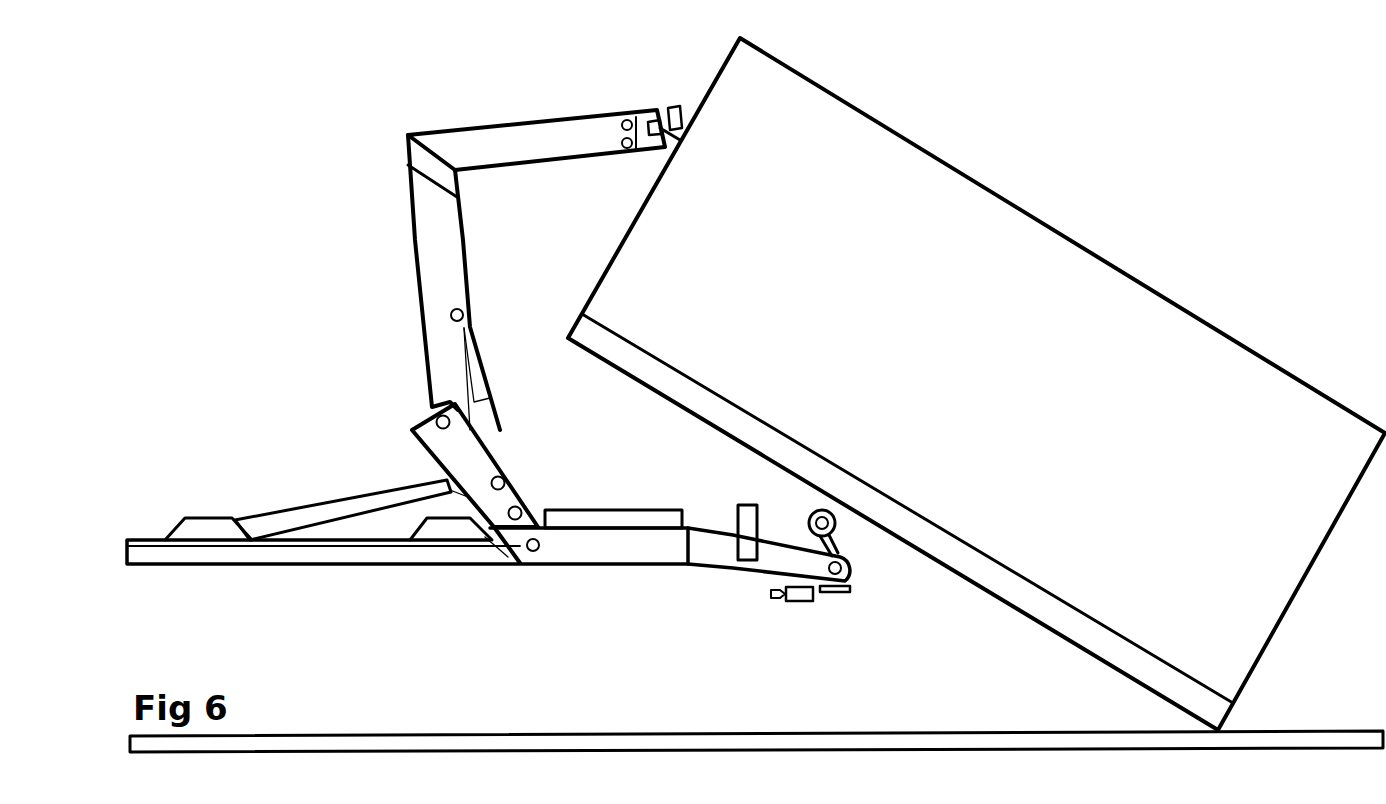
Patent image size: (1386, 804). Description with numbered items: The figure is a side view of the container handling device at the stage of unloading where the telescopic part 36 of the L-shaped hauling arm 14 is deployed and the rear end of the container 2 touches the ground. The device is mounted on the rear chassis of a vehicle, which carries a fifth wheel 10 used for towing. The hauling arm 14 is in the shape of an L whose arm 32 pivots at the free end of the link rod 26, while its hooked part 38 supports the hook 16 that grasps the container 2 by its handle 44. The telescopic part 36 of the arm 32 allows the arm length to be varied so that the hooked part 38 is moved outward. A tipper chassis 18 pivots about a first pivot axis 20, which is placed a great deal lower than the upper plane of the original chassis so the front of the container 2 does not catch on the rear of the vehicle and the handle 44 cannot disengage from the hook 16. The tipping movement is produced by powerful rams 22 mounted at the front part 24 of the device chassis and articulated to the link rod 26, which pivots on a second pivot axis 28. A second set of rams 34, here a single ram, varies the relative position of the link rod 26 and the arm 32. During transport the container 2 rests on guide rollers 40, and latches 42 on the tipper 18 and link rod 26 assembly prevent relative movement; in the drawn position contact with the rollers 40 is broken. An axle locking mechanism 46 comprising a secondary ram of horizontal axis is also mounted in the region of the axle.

The container 2 is at (1055, 208).
The fifth wheel 10 is at (618, 508).
The hauling arm 14 is at (494, 260).
The hook 16 is at (672, 108).
The tipper chassis 18 is at (745, 572).
The first pivot axis 20 is at (850, 570).
The rams 22 is at (305, 505).
The front part of chassis 24 is at (345, 567).
The link rod 26 is at (418, 448).
The second pivot axis 28 is at (538, 552).
The arm of the L 32 is at (418, 243).
The second set of rams 34 is at (505, 432).
The telescopic part 36 is at (436, 145).
The hooked part 38 is at (565, 118).
The guide rollers 40 is at (836, 527).
The latches 42 is at (767, 505).
The handle 44 is at (667, 148).
The axle locking mechanism 46 is at (797, 602).